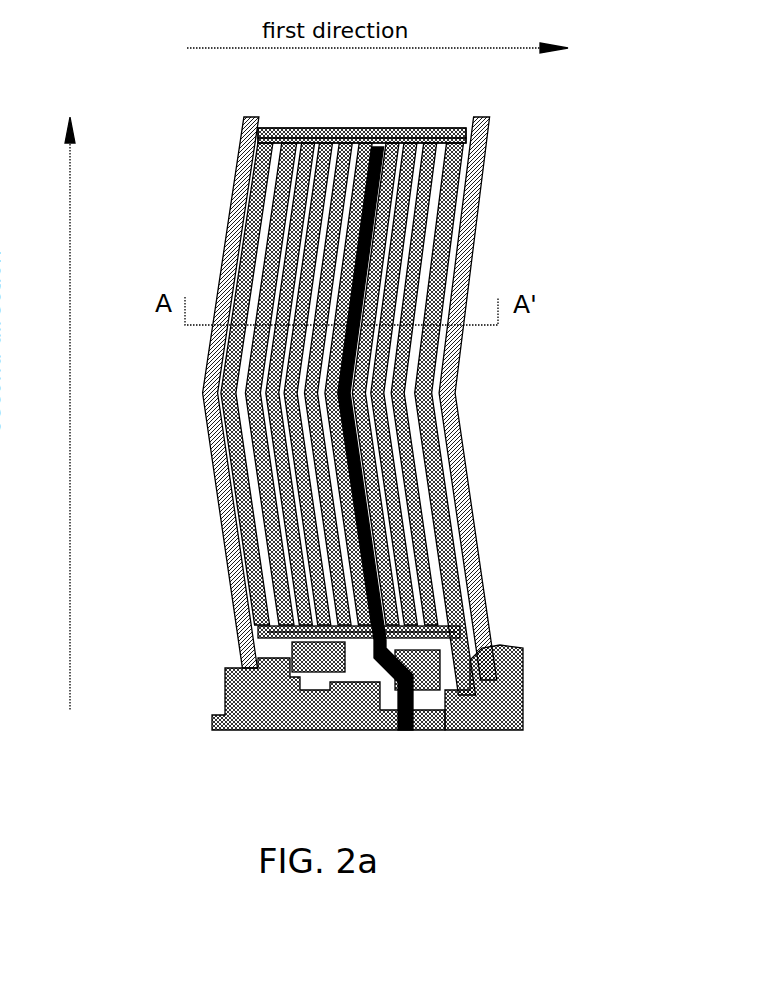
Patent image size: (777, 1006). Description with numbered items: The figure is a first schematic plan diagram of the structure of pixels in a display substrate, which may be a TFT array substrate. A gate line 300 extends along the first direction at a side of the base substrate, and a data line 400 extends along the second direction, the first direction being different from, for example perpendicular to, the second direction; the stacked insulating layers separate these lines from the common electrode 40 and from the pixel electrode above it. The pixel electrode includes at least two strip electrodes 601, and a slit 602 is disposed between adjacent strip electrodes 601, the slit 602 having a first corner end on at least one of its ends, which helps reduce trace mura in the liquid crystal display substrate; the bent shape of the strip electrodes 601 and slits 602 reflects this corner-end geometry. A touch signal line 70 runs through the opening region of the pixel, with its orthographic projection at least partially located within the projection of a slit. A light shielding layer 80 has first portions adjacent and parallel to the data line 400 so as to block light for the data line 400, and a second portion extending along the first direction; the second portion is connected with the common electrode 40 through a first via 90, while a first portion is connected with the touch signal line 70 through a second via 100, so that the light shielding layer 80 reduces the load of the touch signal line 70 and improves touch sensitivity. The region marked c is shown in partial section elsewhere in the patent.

The common electrode 40 is at (275, 128).
The first via 90 is at (318, 138).
The touch signal line 70 is at (383, 143).
The light shielding layer 80 is at (466, 128).
The data line 400 is at (228, 160).
The strip electrode 601 is at (280, 285).
The slit 602 is at (285, 240).
The gate line 300 is at (207, 718).
The second via 100 is at (443, 728).
The partial section region c is at (345, 730).